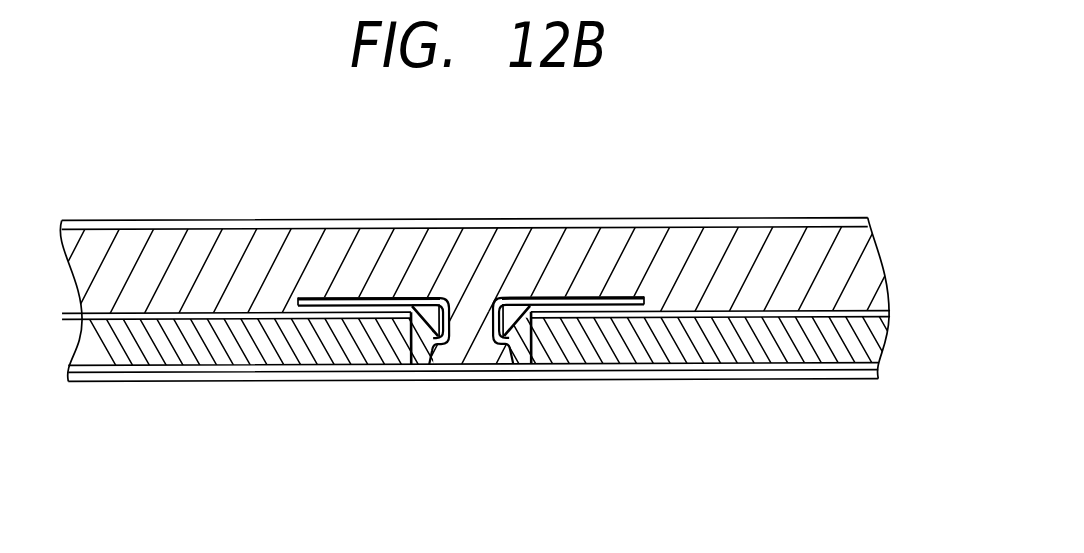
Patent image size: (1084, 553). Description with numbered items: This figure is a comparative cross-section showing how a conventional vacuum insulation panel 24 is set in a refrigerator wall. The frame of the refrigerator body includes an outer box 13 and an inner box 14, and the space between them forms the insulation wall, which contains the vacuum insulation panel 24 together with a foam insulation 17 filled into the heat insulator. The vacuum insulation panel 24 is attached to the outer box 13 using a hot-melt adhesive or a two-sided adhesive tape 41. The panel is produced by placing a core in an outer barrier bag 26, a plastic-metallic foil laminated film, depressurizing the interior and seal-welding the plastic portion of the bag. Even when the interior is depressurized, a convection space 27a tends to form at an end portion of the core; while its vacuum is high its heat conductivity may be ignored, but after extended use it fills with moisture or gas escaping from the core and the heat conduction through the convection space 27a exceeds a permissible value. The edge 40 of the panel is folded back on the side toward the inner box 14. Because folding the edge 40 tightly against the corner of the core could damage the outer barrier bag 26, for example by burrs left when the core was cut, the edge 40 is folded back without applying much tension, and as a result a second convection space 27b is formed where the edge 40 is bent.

The outer box 13 is at (88, 381).
The inner box 14 is at (797, 223).
The foam insulation 17 is at (362, 245).
The conventional vacuum insulation panel 24 is at (200, 345).
The outer barrier bag 26 is at (375, 370).
The convection space 27a is at (498, 350).
The convection space 27b is at (520, 306).
The edge 40 is at (327, 298).
The two-sided adhesive tape 41 is at (310, 370).